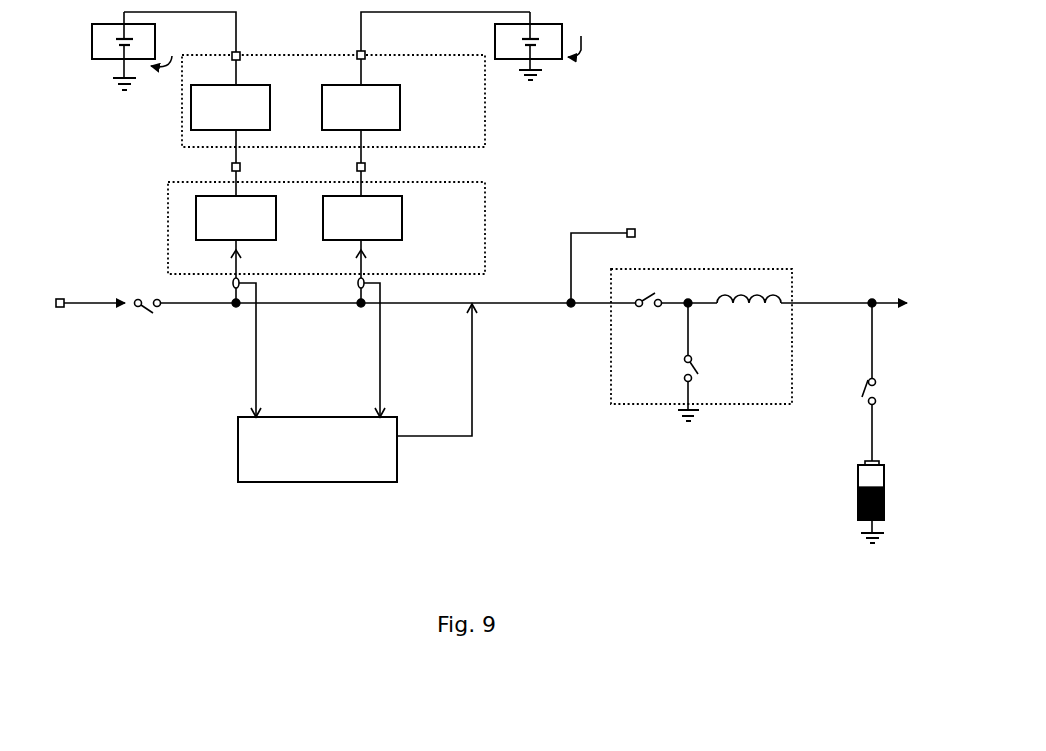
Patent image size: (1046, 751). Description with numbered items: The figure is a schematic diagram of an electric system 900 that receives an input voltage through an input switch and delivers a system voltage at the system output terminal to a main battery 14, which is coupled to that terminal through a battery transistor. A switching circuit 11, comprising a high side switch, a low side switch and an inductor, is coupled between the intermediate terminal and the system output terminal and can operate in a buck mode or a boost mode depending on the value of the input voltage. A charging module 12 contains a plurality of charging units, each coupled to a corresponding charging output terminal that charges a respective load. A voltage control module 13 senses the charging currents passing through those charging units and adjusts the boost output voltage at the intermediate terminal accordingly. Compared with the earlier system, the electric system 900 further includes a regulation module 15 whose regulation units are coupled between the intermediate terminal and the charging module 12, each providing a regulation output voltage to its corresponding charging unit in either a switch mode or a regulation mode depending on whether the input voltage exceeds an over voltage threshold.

The electric system 900 is at (833, 183).
The switching circuit 11 is at (797, 284).
The charging module 12 is at (490, 139).
The voltage control module 13 is at (293, 486).
The main battery 14 is at (849, 471).
The regulation module 15 is at (490, 220).